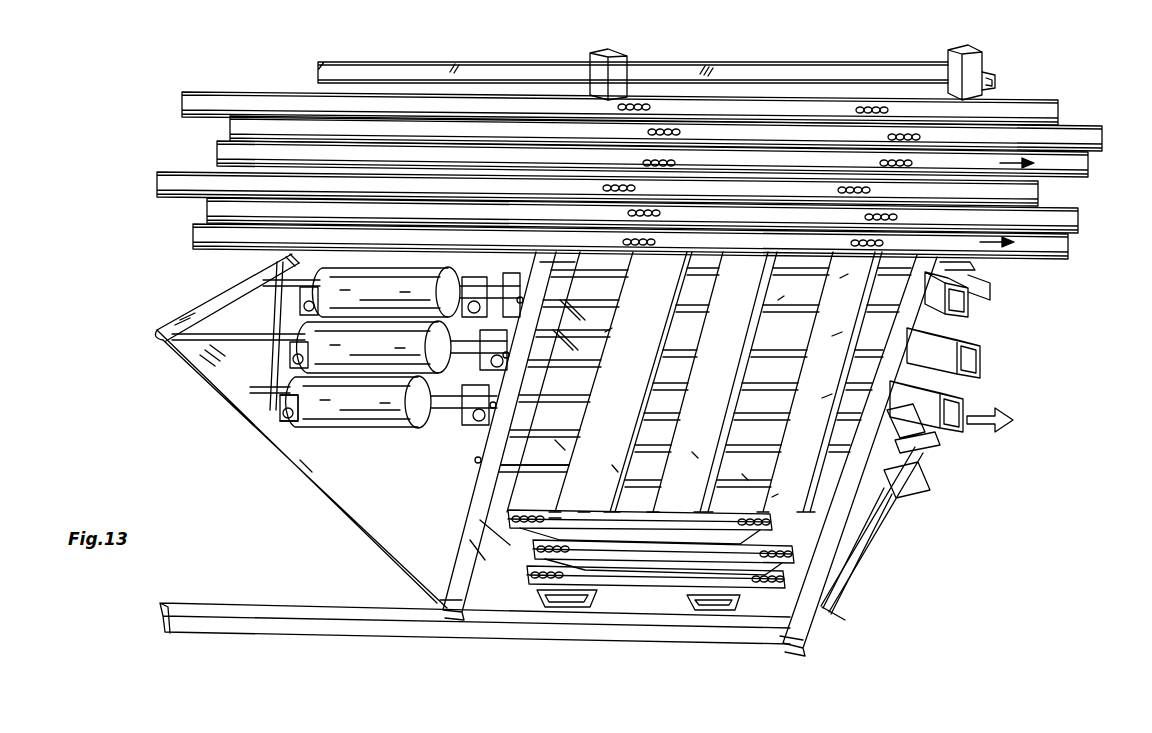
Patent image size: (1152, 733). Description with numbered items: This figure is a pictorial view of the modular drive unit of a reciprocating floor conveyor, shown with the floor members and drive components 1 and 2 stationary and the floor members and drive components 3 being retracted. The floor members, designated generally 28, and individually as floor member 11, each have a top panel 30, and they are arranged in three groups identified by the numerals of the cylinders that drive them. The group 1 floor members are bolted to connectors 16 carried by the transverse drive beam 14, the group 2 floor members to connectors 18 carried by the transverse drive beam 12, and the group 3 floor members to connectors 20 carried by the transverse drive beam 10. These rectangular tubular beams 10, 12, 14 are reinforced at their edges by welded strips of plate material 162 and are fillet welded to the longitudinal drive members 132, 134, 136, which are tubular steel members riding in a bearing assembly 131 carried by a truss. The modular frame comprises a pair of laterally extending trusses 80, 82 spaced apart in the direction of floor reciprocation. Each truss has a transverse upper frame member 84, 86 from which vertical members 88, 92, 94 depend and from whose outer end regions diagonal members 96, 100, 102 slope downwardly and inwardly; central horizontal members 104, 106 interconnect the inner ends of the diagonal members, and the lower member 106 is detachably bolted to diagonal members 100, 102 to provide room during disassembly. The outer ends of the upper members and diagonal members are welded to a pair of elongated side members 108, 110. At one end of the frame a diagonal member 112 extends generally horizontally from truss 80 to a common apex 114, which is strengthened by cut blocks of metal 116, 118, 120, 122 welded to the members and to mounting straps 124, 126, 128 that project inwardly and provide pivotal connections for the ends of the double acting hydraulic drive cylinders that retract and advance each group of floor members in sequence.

The floor members and drive components of group one 1 is at (1105, 137).
The floor members and drive components of group two 2 is at (1092, 165).
The floor members and drive components of group three 3 is at (1062, 108).
The transverse drive beam 10 is at (615, 468).
The floor member 11 is at (297, 466).
The transverse drive beam 12 is at (695, 455).
The transverse drive beam 14 is at (745, 477).
The connector beam 16 is at (686, 548).
The connector beam 18 is at (610, 582).
The connector beam 20 is at (583, 512).
The floor member 28 is at (641, 340).
The top panel 30 is at (598, 287).
The truss 80 is at (460, 480).
The truss 82 is at (920, 546).
The transverse upper frame member 84 is at (478, 500).
The transverse upper frame member 86 is at (806, 605).
The vertical member 88 is at (480, 462).
The vertical member 92 is at (892, 500).
The vertical member 94 is at (965, 262).
The diagonal member 96 is at (480, 525).
The diagonal member 100 is at (856, 565).
The diagonal member 102 is at (978, 284).
The central horizontal member 104 is at (560, 445).
The central horizontal member 106 is at (962, 325).
The elongated side member 108 is at (380, 630).
The elongated side member 110 is at (722, 70).
The diagonal member 112 is at (252, 290).
The apex 114 is at (158, 338).
The cut block of metal 116 is at (247, 399).
The cut block of metal 118 is at (213, 362).
The cut block of metal 120 is at (226, 318).
The cut block of metal 122 is at (288, 262).
The mounting strap 124 is at (262, 428).
The mounting strap 126 is at (268, 341).
The mounting strap 128 is at (282, 287).
The bearing assembly 131 is at (932, 443).
The longitudinal drive member 132 is at (825, 400).
The longitudinal drive member 134 is at (835, 338).
The longitudinal drive member 136 is at (842, 280).
The strip of plate material 162 is at (606, 332).